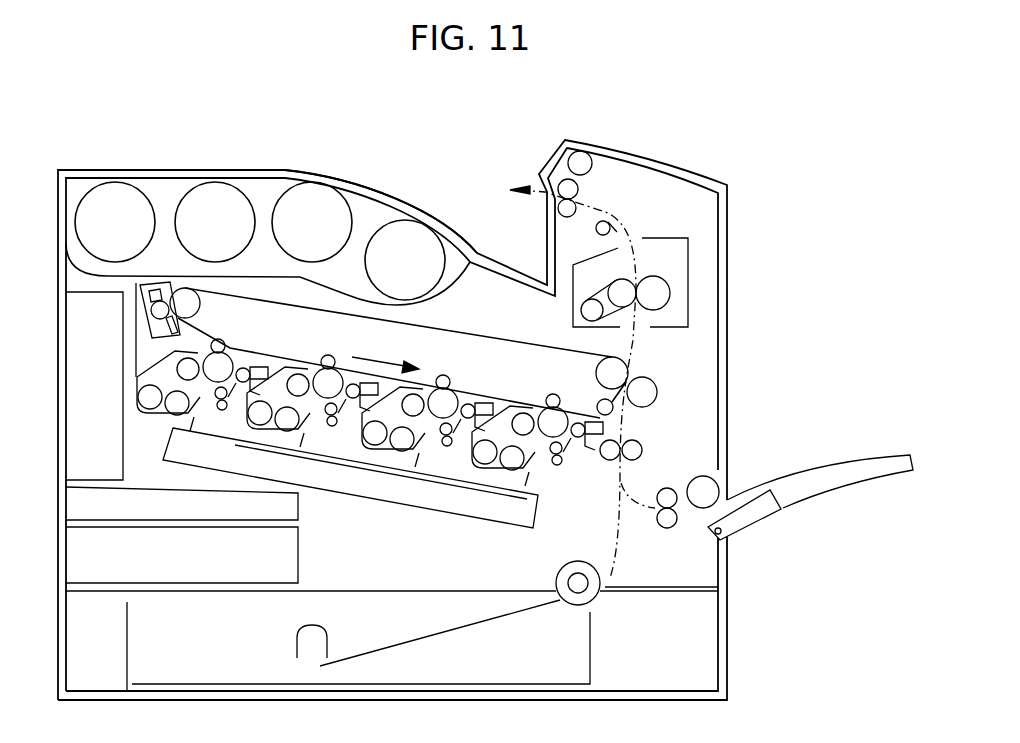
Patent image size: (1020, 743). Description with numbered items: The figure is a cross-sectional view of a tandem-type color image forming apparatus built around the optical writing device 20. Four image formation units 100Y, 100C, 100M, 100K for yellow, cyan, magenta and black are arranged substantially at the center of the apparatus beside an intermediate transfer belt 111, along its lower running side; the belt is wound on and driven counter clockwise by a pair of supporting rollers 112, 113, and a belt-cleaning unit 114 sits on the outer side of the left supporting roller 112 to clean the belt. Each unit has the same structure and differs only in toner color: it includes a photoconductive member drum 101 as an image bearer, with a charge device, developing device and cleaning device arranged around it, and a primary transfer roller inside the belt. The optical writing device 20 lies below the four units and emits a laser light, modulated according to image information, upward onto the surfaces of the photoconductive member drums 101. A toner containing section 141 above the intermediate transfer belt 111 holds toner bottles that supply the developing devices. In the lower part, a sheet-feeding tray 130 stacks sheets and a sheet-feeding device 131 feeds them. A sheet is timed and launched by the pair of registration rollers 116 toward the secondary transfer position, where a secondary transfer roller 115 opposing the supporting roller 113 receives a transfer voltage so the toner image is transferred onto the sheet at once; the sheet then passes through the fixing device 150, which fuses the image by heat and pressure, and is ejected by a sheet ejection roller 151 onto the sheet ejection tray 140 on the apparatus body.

The optical writing device 20 is at (482, 523).
The photoconductive member drum 101 is at (232, 350).
The image formation unit for yellow 100Y is at (145, 360).
The image formation unit for cyan 100C is at (240, 424).
The image formation unit for magenta 100M is at (353, 446).
The image formation unit for black 100K is at (462, 460).
The intermediate transfer belt 111 is at (467, 328).
The supporting roller 112 is at (201, 303).
The supporting roller 113 is at (597, 373).
The belt-cleaning unit 114 is at (145, 312).
The secondary transfer roller 115 is at (650, 387).
The pair of registration rollers 116 is at (641, 448).
The sheet-feeding tray 130 is at (592, 644).
The sheet-feeding device 131 is at (557, 577).
The sheet ejection tray 140 is at (387, 190).
The toner containing section 141 is at (266, 185).
The fixing device 150 is at (663, 237).
The sheet ejection roller 151 is at (581, 190).